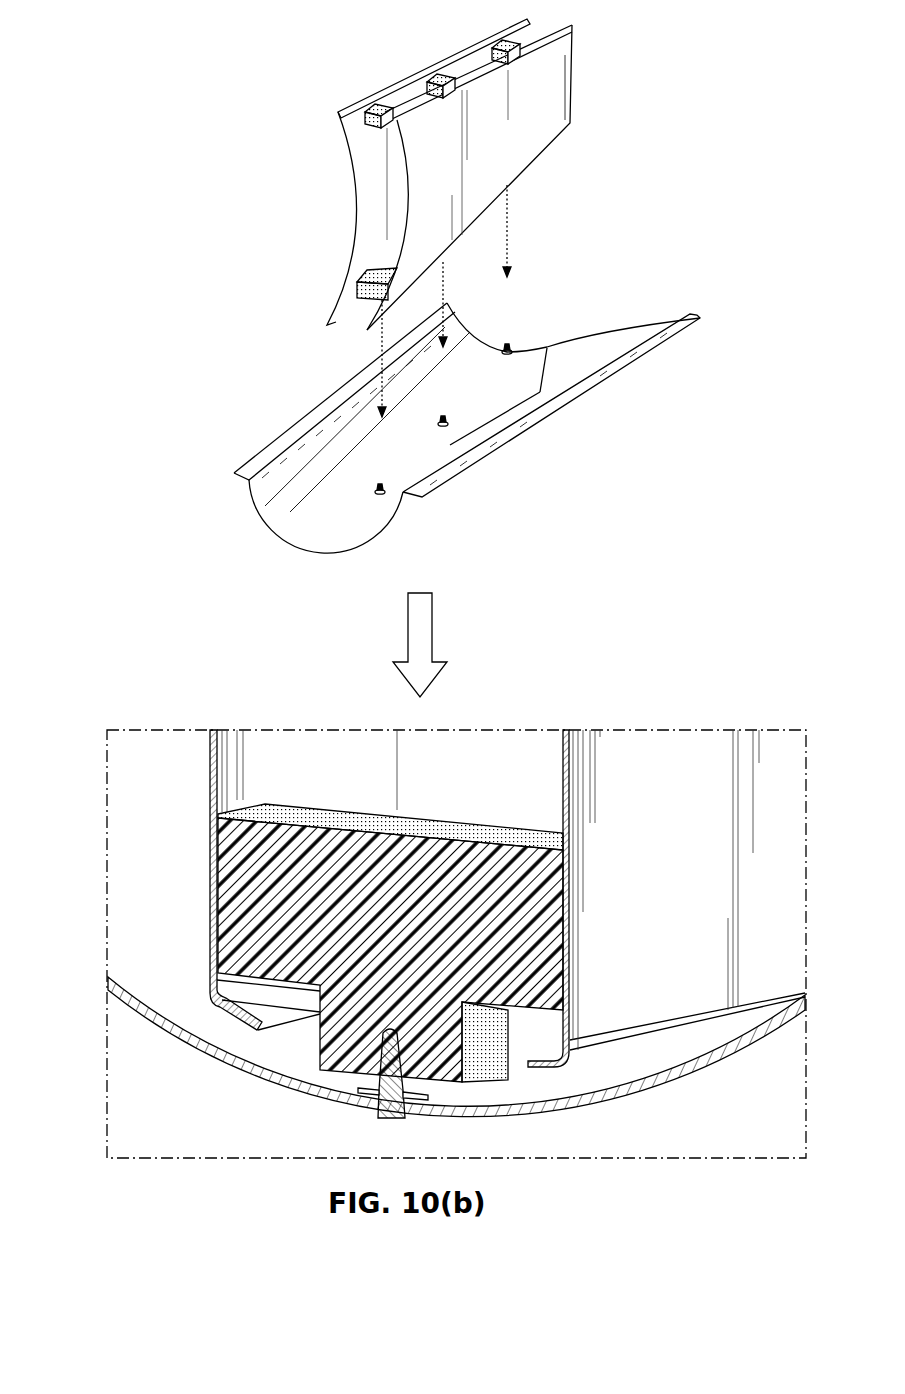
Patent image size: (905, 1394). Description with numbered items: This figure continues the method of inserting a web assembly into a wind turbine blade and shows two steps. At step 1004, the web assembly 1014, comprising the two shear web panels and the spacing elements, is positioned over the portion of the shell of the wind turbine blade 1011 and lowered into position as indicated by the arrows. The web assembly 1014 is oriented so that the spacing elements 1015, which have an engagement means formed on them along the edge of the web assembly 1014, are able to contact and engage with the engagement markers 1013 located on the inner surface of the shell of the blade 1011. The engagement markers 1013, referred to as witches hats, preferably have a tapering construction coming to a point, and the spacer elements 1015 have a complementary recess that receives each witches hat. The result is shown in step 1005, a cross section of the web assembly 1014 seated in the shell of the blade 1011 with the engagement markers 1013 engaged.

The positioning step 1004 is at (178, 463).
The result step 1005 is at (94, 942).
The wind turbine blade 1011 is at (268, 450).
The engagement markers 1013 is at (507, 344).
The web assembly 1014 is at (347, 210).
The spacing elements 1015 is at (495, 42).